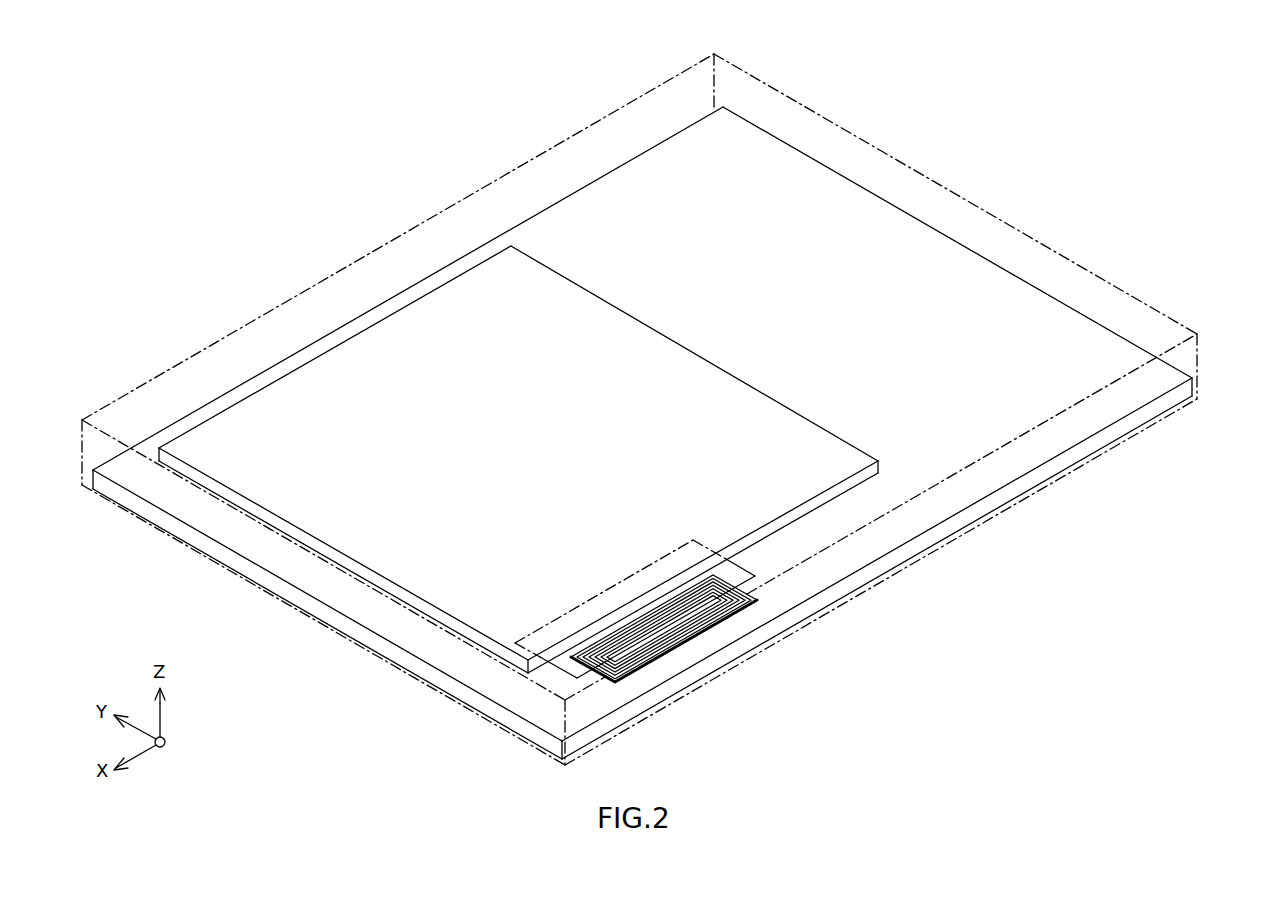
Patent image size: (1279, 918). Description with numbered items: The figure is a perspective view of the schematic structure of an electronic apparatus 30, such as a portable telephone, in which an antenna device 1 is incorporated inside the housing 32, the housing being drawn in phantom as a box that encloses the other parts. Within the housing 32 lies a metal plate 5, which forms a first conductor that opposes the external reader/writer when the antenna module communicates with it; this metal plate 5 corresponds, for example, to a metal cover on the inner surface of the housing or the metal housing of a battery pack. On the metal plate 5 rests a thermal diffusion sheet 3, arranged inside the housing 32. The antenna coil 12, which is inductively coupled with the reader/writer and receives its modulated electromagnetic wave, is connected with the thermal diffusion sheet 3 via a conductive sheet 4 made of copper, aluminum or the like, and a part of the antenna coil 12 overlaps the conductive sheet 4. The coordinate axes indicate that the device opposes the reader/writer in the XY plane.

The antenna device 1 is at (664, 409).
The electronic apparatus 30 is at (313, 176).
The housing 32 is at (957, 195).
The metal plate 5 is at (1097, 417).
The thermal diffusion sheet 3 is at (235, 435).
The conductive sheet 4 is at (705, 550).
The antenna coil 12 is at (683, 637).